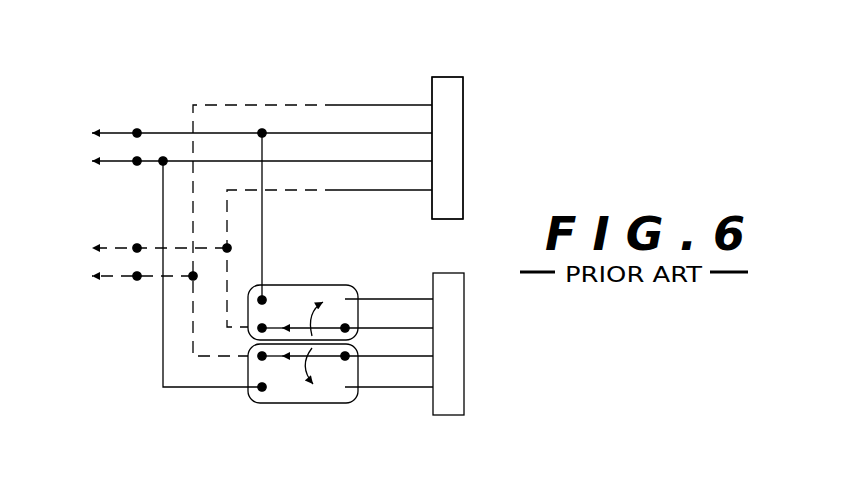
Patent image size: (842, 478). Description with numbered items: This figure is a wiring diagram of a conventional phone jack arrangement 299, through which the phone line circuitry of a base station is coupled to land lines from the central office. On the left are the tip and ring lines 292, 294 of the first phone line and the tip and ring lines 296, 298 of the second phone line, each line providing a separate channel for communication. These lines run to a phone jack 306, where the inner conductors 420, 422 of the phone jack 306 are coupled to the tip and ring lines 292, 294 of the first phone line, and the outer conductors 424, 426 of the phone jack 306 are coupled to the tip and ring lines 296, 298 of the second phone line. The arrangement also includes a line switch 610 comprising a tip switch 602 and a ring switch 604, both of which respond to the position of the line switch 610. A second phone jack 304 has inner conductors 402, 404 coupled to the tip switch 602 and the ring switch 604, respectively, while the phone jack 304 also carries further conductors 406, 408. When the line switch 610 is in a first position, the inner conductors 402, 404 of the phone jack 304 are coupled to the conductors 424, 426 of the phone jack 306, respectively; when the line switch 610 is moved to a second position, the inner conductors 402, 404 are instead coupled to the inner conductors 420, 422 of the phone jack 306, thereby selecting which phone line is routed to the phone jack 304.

The phone jack arrangement 299 is at (482, 62).
The phone jack 306 is at (464, 122).
The phone jack 304 is at (464, 317).
The tip line 292 is at (112, 131).
The ring line 294 is at (112, 163).
The tip line 296 is at (112, 246).
The ring line 298 is at (112, 278).
The inner conductor 420 is at (424, 132).
The inner conductor 422 is at (424, 160).
The outer conductor 424 is at (424, 190).
The outer conductor 426 is at (424, 104).
The inner conductor 402 is at (426, 329).
The inner conductor 404 is at (426, 357).
The signal line 406 is at (426, 387).
The signal line 408 is at (426, 300).
The tip switch 602 is at (312, 285).
The ring switch 604 is at (310, 404).
The line switch 610 is at (248, 406).